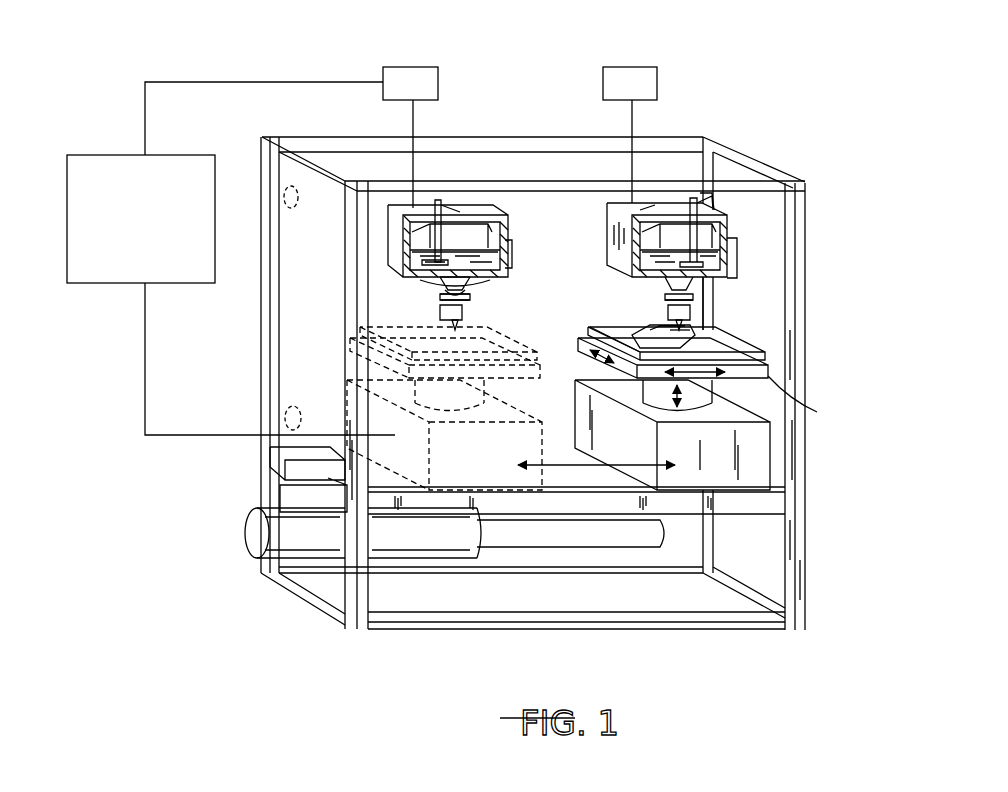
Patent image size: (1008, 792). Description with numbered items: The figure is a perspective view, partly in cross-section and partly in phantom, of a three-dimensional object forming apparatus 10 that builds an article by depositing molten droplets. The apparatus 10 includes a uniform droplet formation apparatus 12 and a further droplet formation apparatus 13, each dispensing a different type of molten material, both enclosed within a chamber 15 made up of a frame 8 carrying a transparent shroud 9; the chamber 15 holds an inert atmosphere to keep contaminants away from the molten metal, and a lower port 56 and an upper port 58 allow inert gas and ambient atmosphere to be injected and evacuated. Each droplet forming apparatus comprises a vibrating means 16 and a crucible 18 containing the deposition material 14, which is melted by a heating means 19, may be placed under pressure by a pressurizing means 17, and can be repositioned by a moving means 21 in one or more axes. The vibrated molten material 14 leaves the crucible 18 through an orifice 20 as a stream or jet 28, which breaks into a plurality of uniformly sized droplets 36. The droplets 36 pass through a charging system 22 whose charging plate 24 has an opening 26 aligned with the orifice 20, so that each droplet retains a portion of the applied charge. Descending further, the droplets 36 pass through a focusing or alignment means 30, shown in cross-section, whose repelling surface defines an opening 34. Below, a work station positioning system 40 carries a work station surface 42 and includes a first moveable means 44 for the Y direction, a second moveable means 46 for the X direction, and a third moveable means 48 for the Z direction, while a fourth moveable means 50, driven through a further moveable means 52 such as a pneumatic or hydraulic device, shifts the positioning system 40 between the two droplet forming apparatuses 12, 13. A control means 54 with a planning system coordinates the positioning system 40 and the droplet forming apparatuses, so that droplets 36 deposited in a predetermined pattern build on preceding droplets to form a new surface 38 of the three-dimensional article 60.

The frame 8 is at (552, 136).
The transparent shroud 9 is at (490, 168).
The three-dimensional object forming apparatus 10 is at (95, 104).
The uniform droplet formation apparatus 12 is at (398, 206).
The further droplet formation apparatus 13 is at (732, 220).
The deposition material 14 is at (654, 251).
The chamber 15 is at (808, 243).
The vibrating means 16 is at (428, 200).
The pressurizing means 17 is at (714, 200).
The crucible 18 is at (500, 228).
The heating means 19 is at (510, 222).
The orifice 20 is at (480, 283).
The moving means 21 is at (405, 66).
The charging system 22 is at (472, 297).
The charging plate 24 is at (438, 298).
The opening 26 is at (440, 292).
The stream or jet 28 is at (432, 272).
The focusing or alignment means 30 is at (467, 314).
The opening 34 is at (441, 305).
The droplets 36 is at (667, 313).
The new surface 38 is at (712, 334).
The work station positioning system 40 is at (368, 337).
The work station surface 42 is at (714, 392).
The first moveable means 44 is at (572, 336).
The second moveable means 46 is at (580, 358).
The third moveable means 48 is at (643, 390).
The fourth moveable means 50 is at (573, 419).
The further moveable means 52 is at (545, 560).
The control means 54 is at (108, 288).
The lower port 56 is at (300, 407).
The upper port 58 is at (284, 190).
The three-dimensional article 60 is at (765, 355).